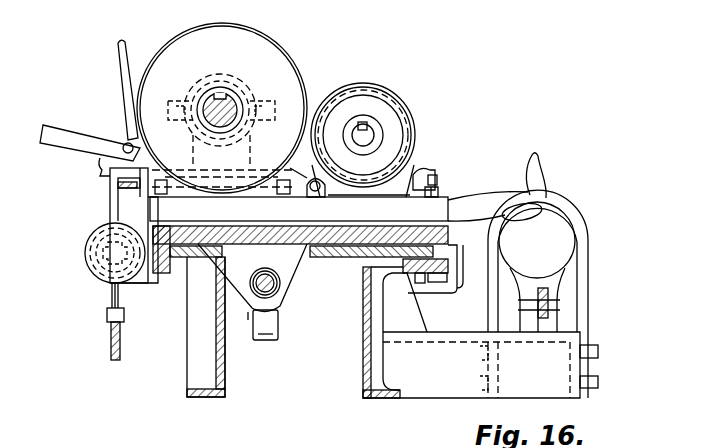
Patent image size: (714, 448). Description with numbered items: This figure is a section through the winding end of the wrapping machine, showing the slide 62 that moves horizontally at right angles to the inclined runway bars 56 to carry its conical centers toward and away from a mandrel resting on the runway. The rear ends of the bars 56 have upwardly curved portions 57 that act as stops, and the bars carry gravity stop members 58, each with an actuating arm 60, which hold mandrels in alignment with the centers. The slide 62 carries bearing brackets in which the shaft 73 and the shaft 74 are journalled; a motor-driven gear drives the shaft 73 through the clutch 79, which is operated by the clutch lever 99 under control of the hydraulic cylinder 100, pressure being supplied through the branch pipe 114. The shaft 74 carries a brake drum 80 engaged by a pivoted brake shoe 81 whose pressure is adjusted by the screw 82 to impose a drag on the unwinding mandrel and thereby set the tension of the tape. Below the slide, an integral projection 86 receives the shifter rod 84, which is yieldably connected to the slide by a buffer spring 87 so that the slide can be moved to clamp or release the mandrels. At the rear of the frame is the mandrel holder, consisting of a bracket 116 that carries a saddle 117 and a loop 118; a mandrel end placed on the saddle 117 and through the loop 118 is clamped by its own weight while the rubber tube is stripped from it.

The runway bars 56 is at (52, 126).
The upwardly curved portions 57 is at (540, 172).
The gravity stop members 58 is at (125, 126).
The actuating arm 60 is at (118, 57).
The slide 62 is at (445, 207).
The shaft 73 is at (213, 105).
The shaft 74 is at (364, 134).
The clutch 79 is at (268, 52).
The brake drum 80 is at (383, 90).
The brake shoe 81 is at (425, 168).
The screw 82 is at (438, 186).
The shifter rod 84 is at (280, 303).
The projection 86 is at (290, 270).
The buffer spring 87 is at (248, 312).
The clutch lever 99 is at (110, 208).
The hydraulic cylinder 100 is at (88, 262).
The branch pipe 114 is at (108, 348).
The bracket 116 is at (445, 393).
The saddle 117 is at (572, 275).
The loop 118 is at (588, 310).